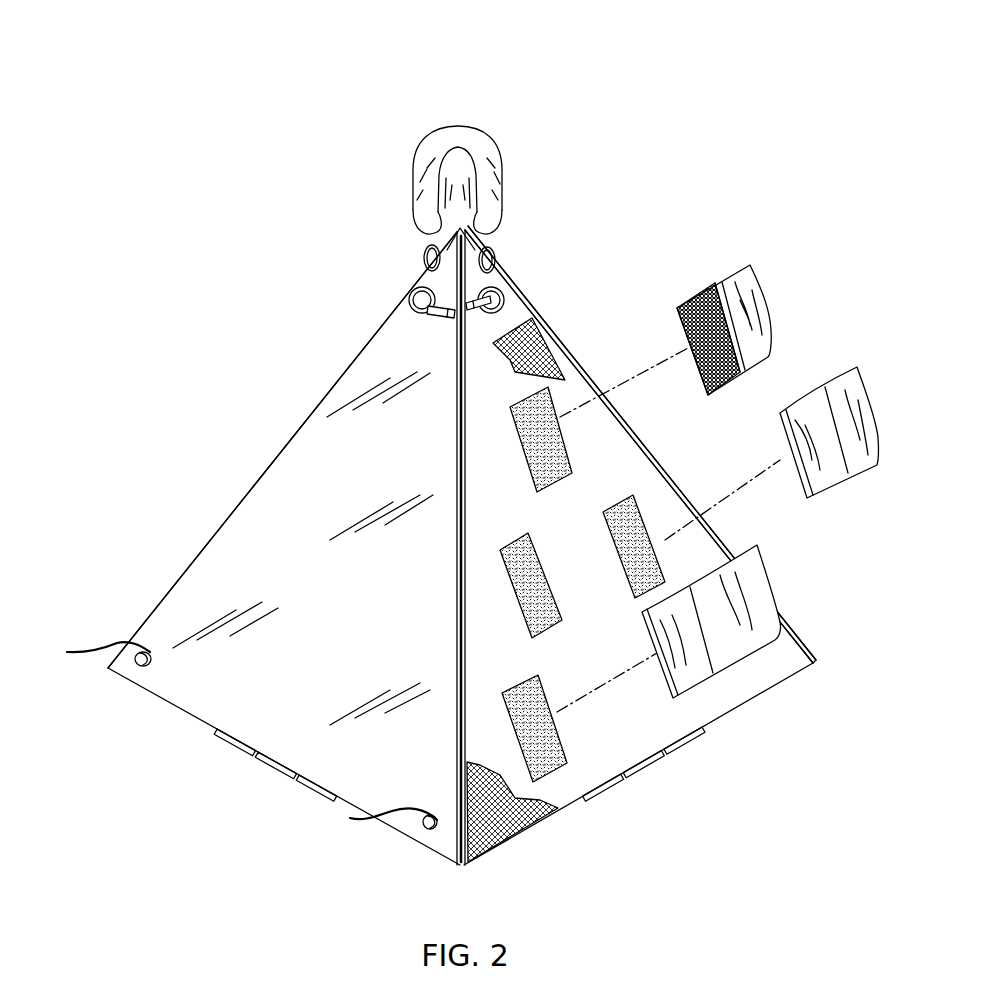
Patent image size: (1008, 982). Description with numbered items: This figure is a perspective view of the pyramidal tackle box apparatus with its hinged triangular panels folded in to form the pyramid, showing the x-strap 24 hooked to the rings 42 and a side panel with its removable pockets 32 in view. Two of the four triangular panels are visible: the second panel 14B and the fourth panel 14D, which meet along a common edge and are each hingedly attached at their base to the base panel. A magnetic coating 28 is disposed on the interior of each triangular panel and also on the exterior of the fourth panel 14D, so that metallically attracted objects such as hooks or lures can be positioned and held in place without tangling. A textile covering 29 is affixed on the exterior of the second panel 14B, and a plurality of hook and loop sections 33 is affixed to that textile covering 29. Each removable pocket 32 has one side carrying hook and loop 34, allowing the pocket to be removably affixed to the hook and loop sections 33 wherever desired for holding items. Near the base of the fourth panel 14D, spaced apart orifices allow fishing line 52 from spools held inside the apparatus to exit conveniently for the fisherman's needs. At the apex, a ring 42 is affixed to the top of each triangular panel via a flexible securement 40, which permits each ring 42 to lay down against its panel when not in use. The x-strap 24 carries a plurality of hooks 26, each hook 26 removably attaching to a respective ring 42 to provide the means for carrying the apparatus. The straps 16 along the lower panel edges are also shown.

The second panel 14B is at (787, 683).
The fourth panel 14D is at (300, 508).
The strap 16 is at (660, 758).
The x-strap 24 is at (468, 113).
The hook 26 is at (393, 250).
The magnetic coating 28 is at (207, 573).
The textile covering 29 is at (532, 342).
The removable pocket 32 is at (744, 262).
The hook and loop section 33 is at (543, 543).
The hook and loop 34 is at (701, 306).
The securement 40 is at (412, 326).
The ring 42 is at (412, 292).
The fishing line 52 is at (111, 642).